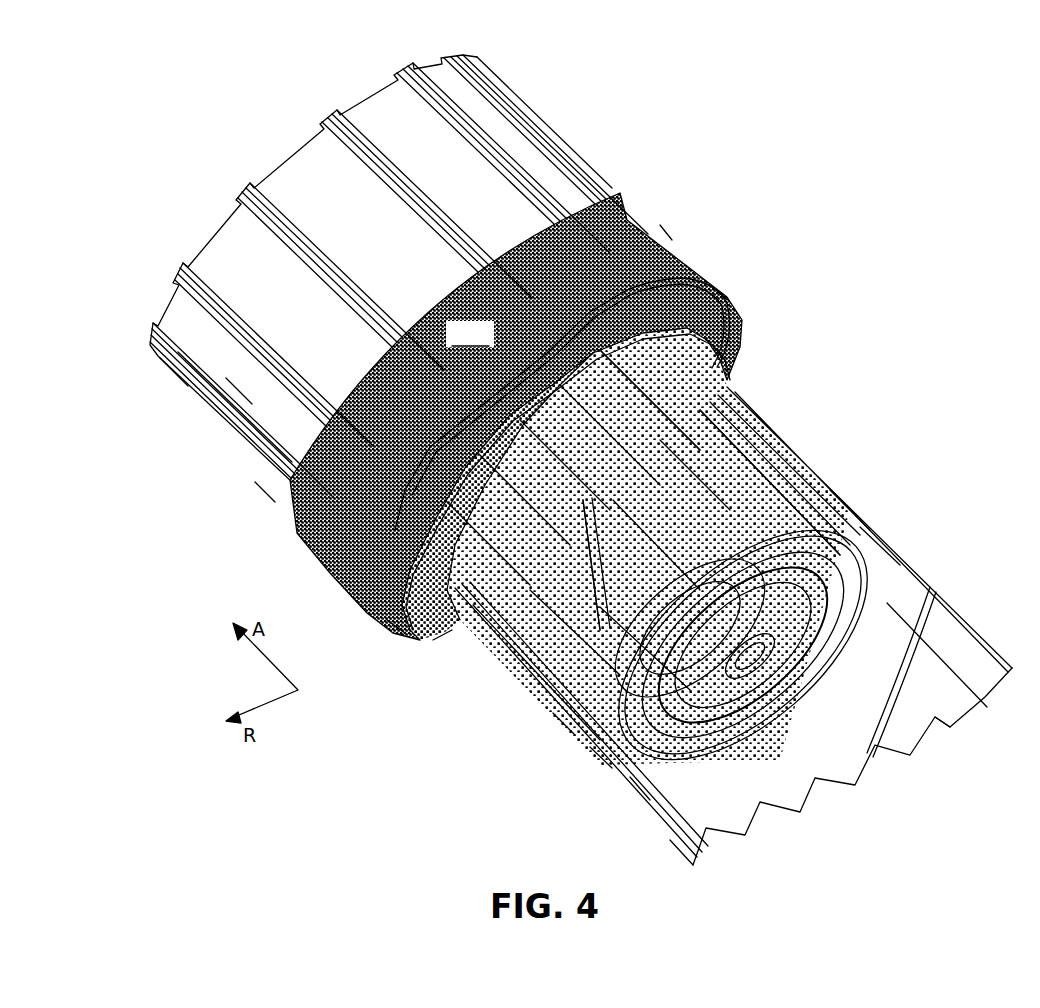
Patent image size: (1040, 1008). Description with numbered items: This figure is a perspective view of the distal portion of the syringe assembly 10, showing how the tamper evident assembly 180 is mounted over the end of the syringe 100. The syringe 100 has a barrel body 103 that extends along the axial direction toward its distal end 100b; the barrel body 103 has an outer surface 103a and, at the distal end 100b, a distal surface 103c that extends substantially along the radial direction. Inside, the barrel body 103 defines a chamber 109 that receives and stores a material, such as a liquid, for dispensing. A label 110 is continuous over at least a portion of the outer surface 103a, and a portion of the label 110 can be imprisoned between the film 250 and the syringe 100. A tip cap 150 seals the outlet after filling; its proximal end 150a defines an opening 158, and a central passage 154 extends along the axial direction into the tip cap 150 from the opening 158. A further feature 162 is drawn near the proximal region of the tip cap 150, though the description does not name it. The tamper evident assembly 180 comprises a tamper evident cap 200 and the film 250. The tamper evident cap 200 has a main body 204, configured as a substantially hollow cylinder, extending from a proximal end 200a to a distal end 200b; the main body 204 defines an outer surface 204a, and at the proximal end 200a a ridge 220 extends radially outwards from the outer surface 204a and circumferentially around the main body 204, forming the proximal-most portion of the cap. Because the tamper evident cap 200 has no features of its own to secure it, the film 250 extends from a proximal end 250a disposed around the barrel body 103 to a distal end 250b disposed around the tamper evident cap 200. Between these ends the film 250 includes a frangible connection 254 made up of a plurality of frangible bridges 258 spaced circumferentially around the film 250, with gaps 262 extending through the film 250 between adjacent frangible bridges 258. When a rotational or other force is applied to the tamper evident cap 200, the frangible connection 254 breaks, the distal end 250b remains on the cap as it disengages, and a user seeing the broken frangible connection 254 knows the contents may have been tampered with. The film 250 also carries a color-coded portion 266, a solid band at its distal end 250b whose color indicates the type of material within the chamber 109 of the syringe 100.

The syringe assembly 10 is at (240, 135).
The syringe 100 is at (980, 650).
The distal end 100b is at (880, 550).
The barrel body 103 is at (940, 697).
The outer surface 103a is at (693, 852).
The distal surface 103c is at (847, 513).
The chamber 109 is at (826, 766).
The label 110 is at (957, 620).
The tip cap 150 is at (728, 402).
The proximal end 150a is at (770, 425).
The central passage 154 is at (590, 747).
The opening 158 is at (630, 777).
The retaining tabs 162 is at (500, 652).
The tamper evident assembly 180 is at (745, 305).
The tamper evident cap 200 is at (477, 58).
The proximal end 200a is at (720, 290).
The distal end 200b is at (187, 400).
The main body 204 is at (263, 487).
The outer surface 204a is at (230, 383).
The ridge 220 is at (390, 630).
The film 250 is at (930, 587).
The proximal end 250a is at (553, 713).
The distal end 250b is at (660, 225).
The frangible connection 254 is at (443, 637).
The frangible bridges 258 is at (572, 430).
The gaps 262 is at (522, 492).
The color-coded portion 266 is at (516, 416).